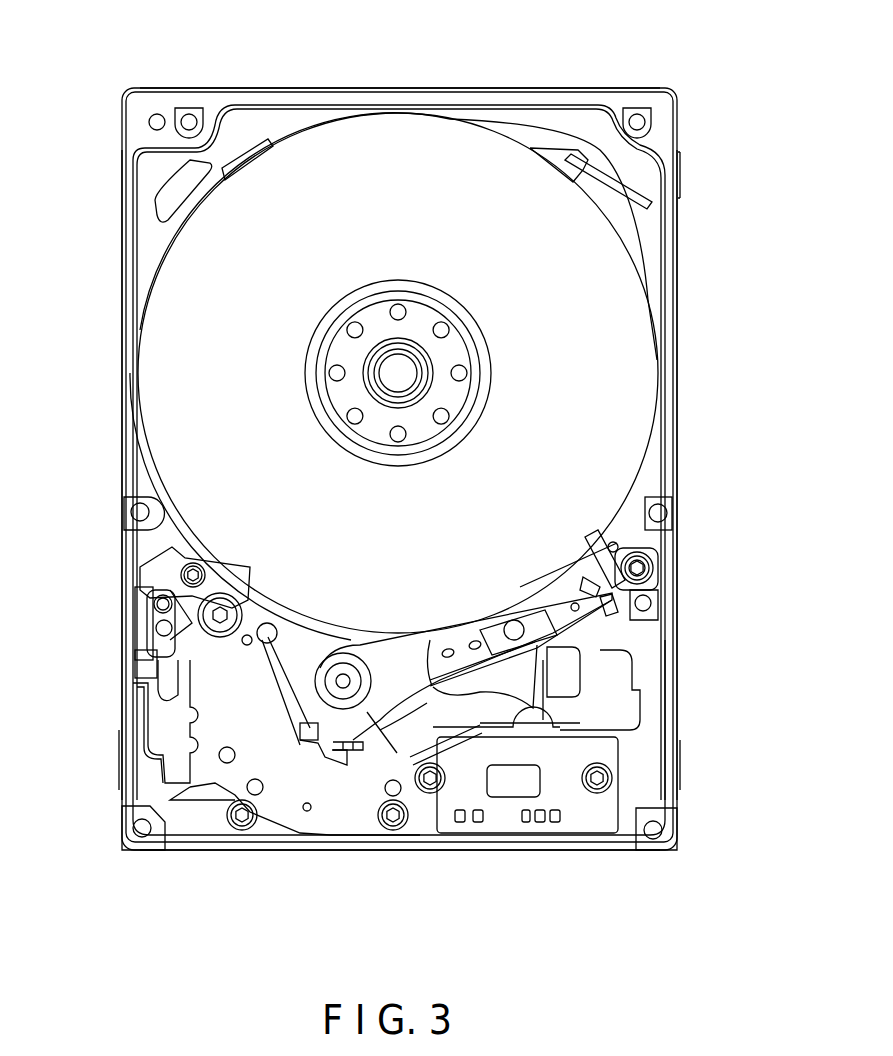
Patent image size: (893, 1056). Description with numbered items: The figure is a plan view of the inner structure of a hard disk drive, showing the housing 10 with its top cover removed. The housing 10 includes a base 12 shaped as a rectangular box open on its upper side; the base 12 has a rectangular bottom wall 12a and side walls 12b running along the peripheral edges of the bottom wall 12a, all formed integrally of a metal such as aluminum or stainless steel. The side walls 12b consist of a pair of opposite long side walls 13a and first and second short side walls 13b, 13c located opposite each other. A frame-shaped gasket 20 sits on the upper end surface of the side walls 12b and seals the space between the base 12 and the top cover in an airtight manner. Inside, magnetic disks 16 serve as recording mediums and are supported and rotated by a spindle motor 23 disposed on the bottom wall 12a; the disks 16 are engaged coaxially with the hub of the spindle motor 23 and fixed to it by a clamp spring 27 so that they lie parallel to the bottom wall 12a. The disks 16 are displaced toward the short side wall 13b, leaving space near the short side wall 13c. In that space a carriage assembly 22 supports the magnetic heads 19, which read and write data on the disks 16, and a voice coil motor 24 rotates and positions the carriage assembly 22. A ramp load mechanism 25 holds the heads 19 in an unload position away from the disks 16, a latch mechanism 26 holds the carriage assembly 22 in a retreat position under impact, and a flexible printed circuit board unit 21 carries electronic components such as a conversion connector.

The housing 10 is at (400, 82).
The base 12 is at (678, 296).
The bottom wall 12a is at (640, 705).
The side walls 12b is at (679, 666).
The long side walls 13a is at (678, 395).
The first short side wall 13b is at (289, 88).
The second short side wall 13c is at (399, 850).
The magnetic disk 16 is at (185, 298).
The magnetic head 19 is at (590, 596).
The gasket 20 is at (529, 105).
The flexible printed circuit board unit 21 is at (568, 785).
The carriage assembly 22 is at (440, 637).
The spindle motor 23 is at (405, 375).
The voice coil motor 24 is at (327, 783).
The ramp load mechanism 25 is at (655, 576).
The latch mechanism 26 is at (150, 645).
The clamp spring 27 is at (312, 383).